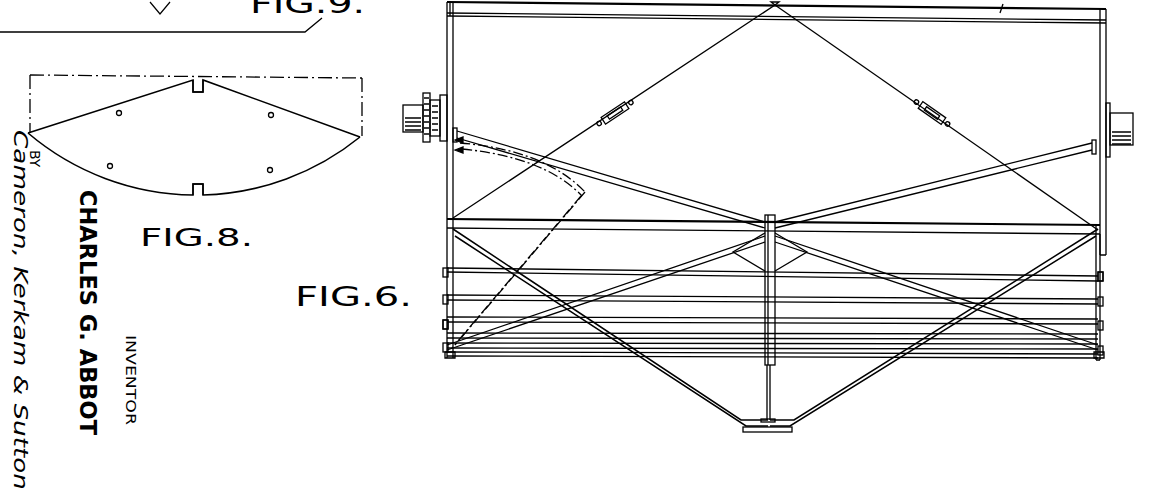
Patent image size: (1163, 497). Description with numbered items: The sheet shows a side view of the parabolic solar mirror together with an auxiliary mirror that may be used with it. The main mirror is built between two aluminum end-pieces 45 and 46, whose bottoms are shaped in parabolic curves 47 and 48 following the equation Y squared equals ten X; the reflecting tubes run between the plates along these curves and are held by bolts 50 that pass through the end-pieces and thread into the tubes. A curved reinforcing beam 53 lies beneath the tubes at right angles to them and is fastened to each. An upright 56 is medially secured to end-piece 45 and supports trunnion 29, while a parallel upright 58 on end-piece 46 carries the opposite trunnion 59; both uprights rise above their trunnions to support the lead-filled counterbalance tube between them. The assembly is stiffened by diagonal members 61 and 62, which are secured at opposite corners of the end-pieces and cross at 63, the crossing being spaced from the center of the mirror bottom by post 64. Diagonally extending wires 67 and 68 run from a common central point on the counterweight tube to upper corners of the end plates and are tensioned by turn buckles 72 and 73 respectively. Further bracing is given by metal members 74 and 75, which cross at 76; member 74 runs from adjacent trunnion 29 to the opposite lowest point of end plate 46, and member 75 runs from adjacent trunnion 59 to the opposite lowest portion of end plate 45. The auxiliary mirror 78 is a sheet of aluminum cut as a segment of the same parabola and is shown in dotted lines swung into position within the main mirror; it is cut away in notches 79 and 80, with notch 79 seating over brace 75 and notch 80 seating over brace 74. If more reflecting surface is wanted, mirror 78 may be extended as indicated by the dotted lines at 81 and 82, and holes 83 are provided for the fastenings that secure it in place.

In FIG. 6, the trunnion 29 is at (412, 104).
In FIG. 6, the metal end-piece 45 is at (444, 329).
In FIG. 6, the metal end-piece 46 is at (1104, 292).
In FIG. 6, the parabolic curve 47 is at (446, 358).
In FIG. 6, the parabolic curve 48 is at (1100, 361).
In FIG. 6, the bolts 50 is at (443, 297).
In FIG. 6, the curved reinforcing beam 53 is at (772, 216).
In FIG. 6, the upright 56 is at (454, 67).
In FIG. 6, the upright 58 is at (1099, 71).
In FIG. 6, the trunnion 59 is at (1120, 114).
In FIG. 6, the diagonal member 61 is at (683, 373).
In FIG. 6, the diagonal member 62 is at (874, 377).
In FIG. 6, the crossing point 63 is at (786, 432).
In FIG. 6, the post 64 is at (773, 396).
In FIG. 6, the diagonally extending wire 67 is at (878, 77).
In FIG. 6, the diagonally extending wire 68 is at (678, 70).
In FIG. 6, the turn buckle 72 is at (914, 116).
In FIG. 6, the turn buckle 73 is at (626, 115).
In FIG. 6, the metal member 74 is at (630, 193).
In FIG. 6, the metal member 75 is at (921, 196).
In FIG. 6, the crossing point 76 is at (780, 247).
In FIG. 8, the auxiliary mirror 78 is at (212, 147).
In FIG. 6, the auxiliary mirror 78 is at (545, 245).
In FIG. 8, the notch 79 is at (203, 189).
In FIG. 8, the notch 80 is at (200, 93).
In FIG. 8, the extension 81 is at (99, 78).
In FIG. 8, the extension 82 is at (297, 78).
In FIG. 8, the holes 83 is at (112, 164).